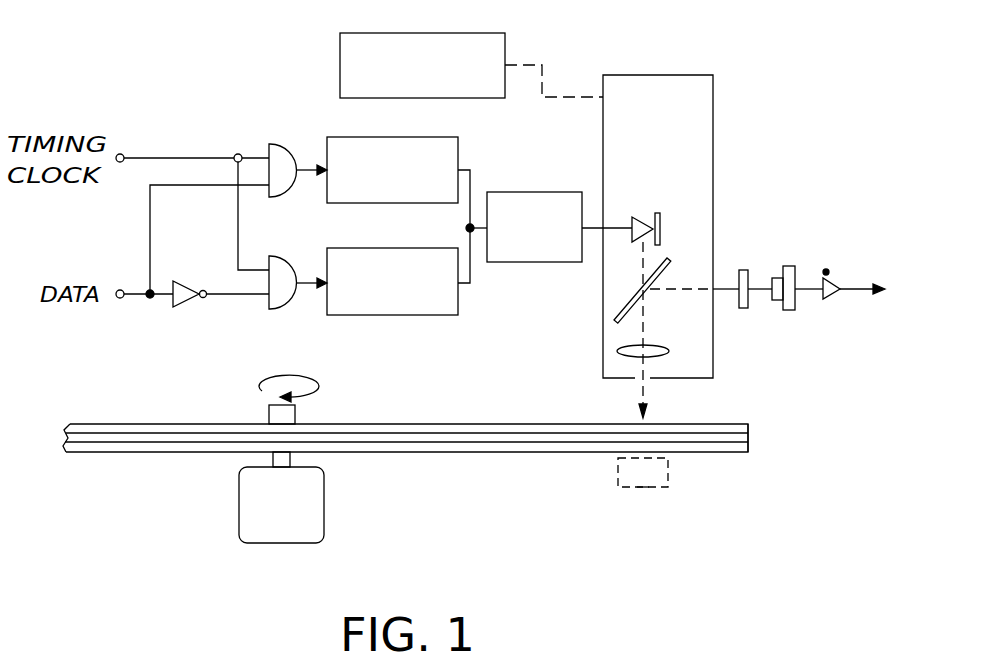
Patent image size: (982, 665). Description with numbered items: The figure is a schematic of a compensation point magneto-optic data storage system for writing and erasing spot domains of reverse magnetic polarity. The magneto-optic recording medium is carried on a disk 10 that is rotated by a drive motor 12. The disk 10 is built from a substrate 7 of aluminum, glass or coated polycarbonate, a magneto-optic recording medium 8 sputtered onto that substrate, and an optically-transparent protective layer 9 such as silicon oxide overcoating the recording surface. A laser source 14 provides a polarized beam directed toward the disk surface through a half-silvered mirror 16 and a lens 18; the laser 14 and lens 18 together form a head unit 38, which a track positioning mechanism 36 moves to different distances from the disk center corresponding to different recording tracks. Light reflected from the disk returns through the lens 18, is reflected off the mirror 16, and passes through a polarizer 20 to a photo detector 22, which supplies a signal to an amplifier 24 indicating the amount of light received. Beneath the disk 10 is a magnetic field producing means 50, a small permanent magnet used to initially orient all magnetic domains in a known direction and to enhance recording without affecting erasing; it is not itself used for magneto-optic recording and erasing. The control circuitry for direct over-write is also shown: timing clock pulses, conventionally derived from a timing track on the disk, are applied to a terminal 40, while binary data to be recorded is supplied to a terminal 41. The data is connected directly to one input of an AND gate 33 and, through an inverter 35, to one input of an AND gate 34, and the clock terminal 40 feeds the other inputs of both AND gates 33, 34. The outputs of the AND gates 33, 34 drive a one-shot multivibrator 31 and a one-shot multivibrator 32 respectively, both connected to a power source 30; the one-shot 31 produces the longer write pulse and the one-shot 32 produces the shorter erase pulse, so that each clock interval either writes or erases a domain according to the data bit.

The substrate 7 is at (720, 445).
The magneto-optic recording medium 8 is at (552, 400).
The optically-transparent protective layer 9 is at (464, 404).
The disk 10 is at (405, 451).
The drive motor 12 is at (313, 478).
The laser source 14 is at (660, 233).
The half-silvered mirror 16 is at (667, 268).
The lens 18 is at (655, 345).
The polarizer 20 is at (743, 270).
The photo detector 22 is at (795, 266).
The amplifier 24 is at (835, 299).
The power source 30 is at (570, 192).
The one-shot multivibrator 31 is at (458, 137).
The one-shot multivibrator 32 is at (446, 248).
The AND gate 33 is at (288, 149).
The AND gate 34 is at (288, 264).
The inverter 35 is at (186, 290).
The track positioning mechanism 36 is at (500, 20).
The head unit 38 is at (715, 116).
The terminal 40 is at (121, 155).
The terminal 41 is at (120, 300).
The magnetic field producing means 50 is at (622, 487).